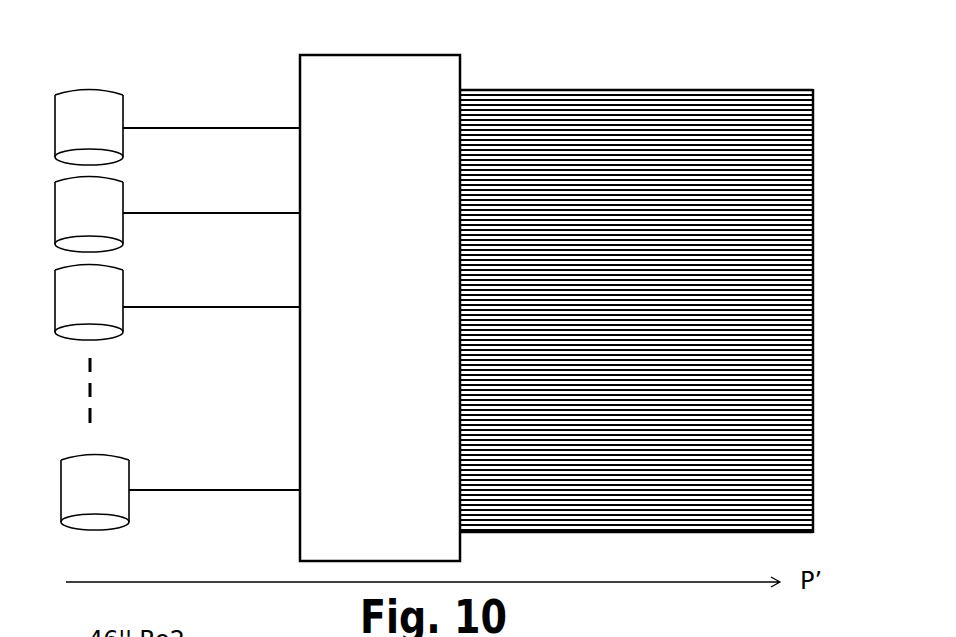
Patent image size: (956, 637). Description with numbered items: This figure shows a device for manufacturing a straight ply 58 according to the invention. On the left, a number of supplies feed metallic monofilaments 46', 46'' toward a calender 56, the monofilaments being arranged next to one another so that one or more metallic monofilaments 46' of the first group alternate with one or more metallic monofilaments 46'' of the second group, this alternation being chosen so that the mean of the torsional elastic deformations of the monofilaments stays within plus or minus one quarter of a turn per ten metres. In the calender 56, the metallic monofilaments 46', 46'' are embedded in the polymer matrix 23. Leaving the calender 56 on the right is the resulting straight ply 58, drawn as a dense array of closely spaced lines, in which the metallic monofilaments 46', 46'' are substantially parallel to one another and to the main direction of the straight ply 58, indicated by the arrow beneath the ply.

The metallic monofilament of the first group 46' is at (468, 84).
The metallic monofilament of the second group 46'' is at (404, 132).
The calender 56 is at (369, 166).
The straight ply 58 is at (763, 126).
The polymer matrix 23 is at (668, 493).